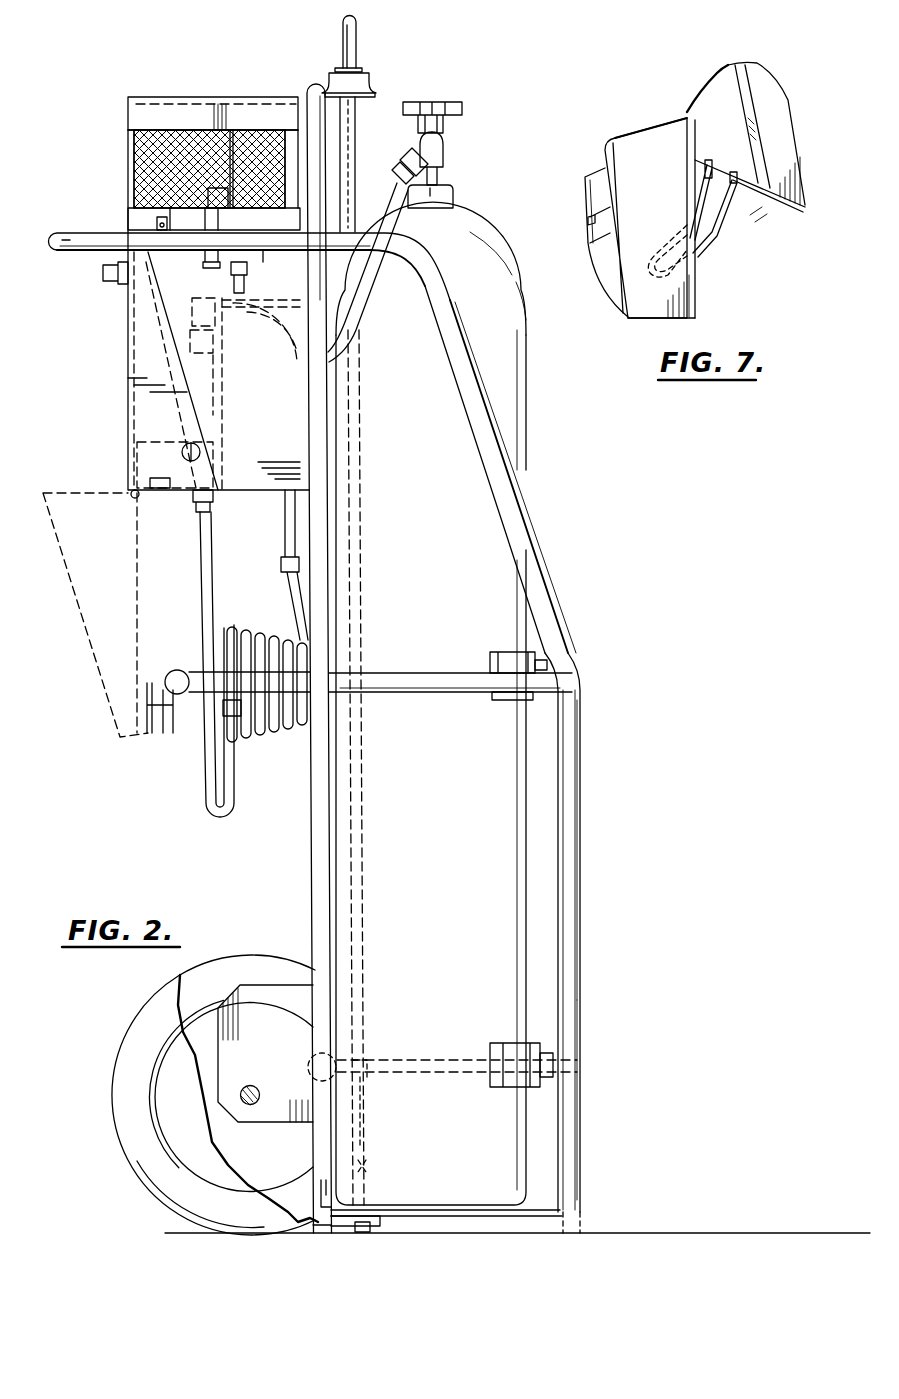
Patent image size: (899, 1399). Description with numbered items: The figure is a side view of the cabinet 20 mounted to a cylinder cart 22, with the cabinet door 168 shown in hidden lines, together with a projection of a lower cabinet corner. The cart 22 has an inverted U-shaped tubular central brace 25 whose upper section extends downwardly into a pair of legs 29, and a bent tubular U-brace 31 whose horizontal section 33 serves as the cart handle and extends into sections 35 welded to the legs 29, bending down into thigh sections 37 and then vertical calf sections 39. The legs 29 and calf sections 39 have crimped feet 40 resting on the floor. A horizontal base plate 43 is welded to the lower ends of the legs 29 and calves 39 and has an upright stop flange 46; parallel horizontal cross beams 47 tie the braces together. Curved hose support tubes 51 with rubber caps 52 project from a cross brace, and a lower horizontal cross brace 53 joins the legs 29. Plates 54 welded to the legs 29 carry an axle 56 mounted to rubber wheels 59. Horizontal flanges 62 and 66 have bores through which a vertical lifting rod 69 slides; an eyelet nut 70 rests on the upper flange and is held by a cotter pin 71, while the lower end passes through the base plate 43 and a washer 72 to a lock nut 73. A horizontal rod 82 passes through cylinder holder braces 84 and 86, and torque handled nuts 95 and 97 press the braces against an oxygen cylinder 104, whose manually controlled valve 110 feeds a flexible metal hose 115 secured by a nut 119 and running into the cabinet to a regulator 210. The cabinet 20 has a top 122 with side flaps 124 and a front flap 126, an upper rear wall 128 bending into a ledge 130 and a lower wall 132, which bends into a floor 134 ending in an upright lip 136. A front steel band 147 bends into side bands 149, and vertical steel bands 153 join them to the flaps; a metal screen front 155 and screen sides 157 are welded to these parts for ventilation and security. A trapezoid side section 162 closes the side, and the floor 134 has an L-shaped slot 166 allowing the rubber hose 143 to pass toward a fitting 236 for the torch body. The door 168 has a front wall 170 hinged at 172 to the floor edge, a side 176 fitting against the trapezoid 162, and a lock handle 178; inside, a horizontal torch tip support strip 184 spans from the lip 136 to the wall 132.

In FIG. 2, the cabinet 20 is at (122, 88).
In FIG. 2, the cylinder cart 22 is at (596, 815).
In FIG. 2, the inverted U-shaped tubular central brace 25 is at (302, 772).
In FIG. 2, the legs 29 is at (312, 838).
In FIG. 2, the bent tubular U-brace 31 is at (593, 765).
In FIG. 2, the horizontal section 33 is at (55, 238).
In FIG. 2, the sections 35 is at (58, 252).
In FIG. 2, the thigh sections 37 is at (489, 458).
In FIG. 2, the vertical calf sections 39 is at (568, 876).
In FIG. 2, the crimped feet 40 is at (325, 1228).
In FIG. 2, the horizontal base plate 43 is at (448, 1208).
In FIG. 2, the upright stop flange 46 is at (364, 1168).
In FIG. 2, the horizontal cross beams 47 is at (418, 692).
In FIG. 2, the curved hose support tubes 51 is at (176, 730).
In FIG. 2, the rubber caps 52 is at (185, 670).
In FIG. 2, the lower horizontal cross brace 53 is at (316, 1062).
In FIG. 2, the plates 54 is at (258, 990).
In FIG. 2, the axle 56 is at (252, 1085).
In FIG. 2, the rubber wheels 59 is at (214, 966).
In FIG. 2, the horizontal flange 62 is at (372, 95).
In FIG. 2, the horizontal flange 66 is at (393, 1088).
In FIG. 2, the vertical lifting rod 69 is at (355, 152).
In FIG. 2, the eyelet nut 70 is at (355, 32).
In FIG. 2, the cotter pin 71 is at (362, 70).
In FIG. 2, the washer 72 is at (376, 1222).
In FIG. 2, the lock nut 73 is at (366, 1224).
In FIG. 2, the horizontal rod 82 is at (420, 1058).
In FIG. 2, the cylinder holder brace 84 is at (505, 651).
In FIG. 2, the cylinder holder brace 86 is at (508, 1044).
In FIG. 2, the torque handled nut 95 is at (545, 664).
In FIG. 2, the torque handled nut 97 is at (556, 1060).
In FIG. 2, the oxygen cylinder 104 is at (518, 368).
In FIG. 2, the manually controlled valve 110 is at (443, 144).
In FIG. 2, the flexible metal hose 115 is at (364, 282).
In FIG. 2, the nut 119 is at (402, 170).
In FIG. 2, the top 122 is at (148, 98).
In FIG. 2, the side flaps 124 is at (218, 105).
In FIG. 2, the front flap 126 is at (126, 108).
In FIG. 2, the upper rear wall 128 is at (312, 118).
In FIG. 2, the ledge 130 is at (260, 308).
In FIG. 2, the lower wall 132 is at (228, 380).
In FIG. 7, the lower wall 132 is at (727, 80).
In FIG. 7, the floor 134 is at (772, 212).
In FIG. 7, the upright lip 136 is at (663, 135).
In FIG. 2, the rubber hose 143 is at (200, 565).
In FIG. 2, the front steel band 147 is at (128, 222).
In FIG. 2, the side bands 149 is at (146, 200).
In FIG. 2, the vertical steel bands 153 is at (292, 135).
In FIG. 2, the metal screen front 155 is at (132, 143).
In FIG. 2, the screen sides 157 is at (178, 130).
In FIG. 2, the trapezoid side section 162 is at (290, 408).
In FIG. 7, the trapezoid side section 162 is at (765, 80).
In FIG. 7, the L-shaped slot 166 is at (705, 222).
In FIG. 2, the cabinet door 168 is at (118, 447).
In FIG. 7, the cabinet door 168 is at (592, 150).
In FIG. 2, the front wall 170 is at (126, 340).
In FIG. 7, the front wall 170 is at (606, 280).
In FIG. 2, the hinge 172 is at (138, 497).
In FIG. 7, the hinge 172 is at (589, 222).
In FIG. 2, the side 176 is at (145, 407).
In FIG. 7, the side 176 is at (645, 306).
In FIG. 2, the lock handle 178 is at (100, 282).
In FIG. 2, the horizontal torch tip support strip 184 is at (143, 462).
In FIG. 2, the control valve regulator 210 is at (274, 262).
In FIG. 2, the fitting 236 is at (214, 500).